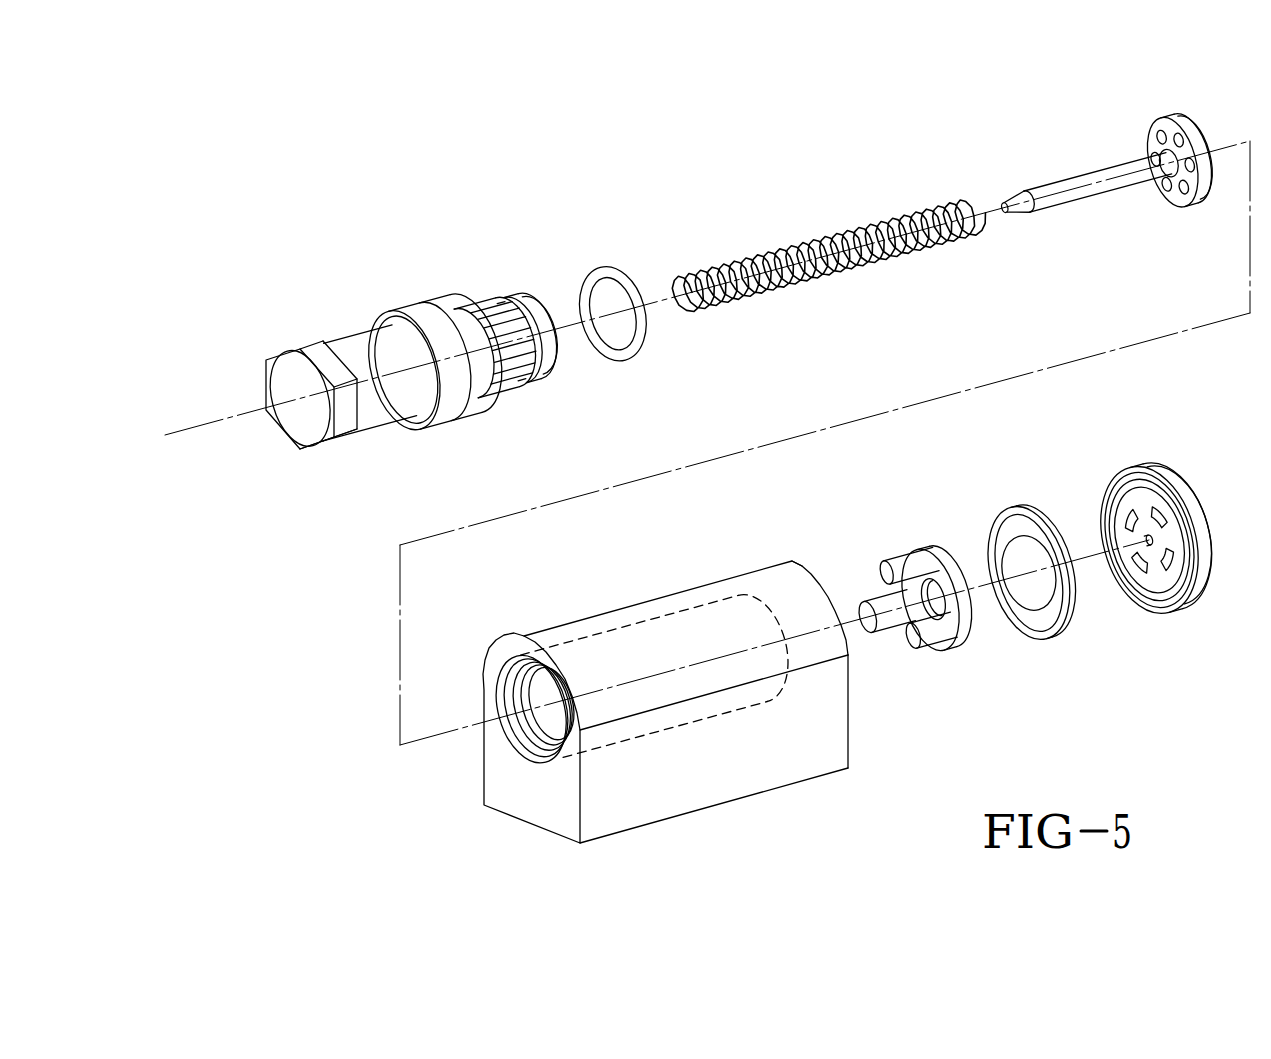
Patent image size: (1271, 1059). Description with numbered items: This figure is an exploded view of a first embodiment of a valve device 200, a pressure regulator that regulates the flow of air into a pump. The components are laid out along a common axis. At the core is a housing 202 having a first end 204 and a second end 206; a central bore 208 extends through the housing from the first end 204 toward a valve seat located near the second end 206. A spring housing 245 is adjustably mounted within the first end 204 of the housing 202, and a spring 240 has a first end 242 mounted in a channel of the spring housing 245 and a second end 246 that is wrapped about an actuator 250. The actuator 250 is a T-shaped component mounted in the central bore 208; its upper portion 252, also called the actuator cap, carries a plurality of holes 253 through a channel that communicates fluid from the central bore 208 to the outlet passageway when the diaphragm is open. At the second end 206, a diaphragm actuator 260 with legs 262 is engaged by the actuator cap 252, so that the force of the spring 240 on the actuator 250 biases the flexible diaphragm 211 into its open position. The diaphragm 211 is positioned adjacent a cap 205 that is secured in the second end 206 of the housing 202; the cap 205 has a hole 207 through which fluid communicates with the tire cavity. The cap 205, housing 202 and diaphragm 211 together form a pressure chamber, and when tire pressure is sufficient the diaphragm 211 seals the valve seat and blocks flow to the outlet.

The valve device 200 is at (440, 198).
The housing 202 is at (629, 597).
The first end 204 is at (500, 655).
The cap 205 is at (1183, 467).
The second end 206 is at (828, 590).
The hole 207 is at (1142, 541).
The central bore 208 is at (715, 650).
The flexible diaphragm 211 is at (1067, 593).
The spring 240 is at (797, 237).
The first end of the spring 242 is at (660, 292).
The spring housing 245 is at (360, 356).
The second end of the spring 246 is at (975, 215).
The actuator 250 is at (1071, 169).
The upper portion (actuator cap) 252 is at (1181, 204).
The disk holes 253 is at (1181, 141).
The diaphragm actuator 260 is at (916, 552).
The legs 262 is at (925, 655).